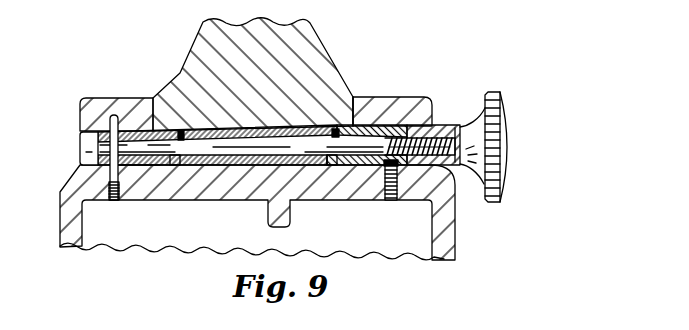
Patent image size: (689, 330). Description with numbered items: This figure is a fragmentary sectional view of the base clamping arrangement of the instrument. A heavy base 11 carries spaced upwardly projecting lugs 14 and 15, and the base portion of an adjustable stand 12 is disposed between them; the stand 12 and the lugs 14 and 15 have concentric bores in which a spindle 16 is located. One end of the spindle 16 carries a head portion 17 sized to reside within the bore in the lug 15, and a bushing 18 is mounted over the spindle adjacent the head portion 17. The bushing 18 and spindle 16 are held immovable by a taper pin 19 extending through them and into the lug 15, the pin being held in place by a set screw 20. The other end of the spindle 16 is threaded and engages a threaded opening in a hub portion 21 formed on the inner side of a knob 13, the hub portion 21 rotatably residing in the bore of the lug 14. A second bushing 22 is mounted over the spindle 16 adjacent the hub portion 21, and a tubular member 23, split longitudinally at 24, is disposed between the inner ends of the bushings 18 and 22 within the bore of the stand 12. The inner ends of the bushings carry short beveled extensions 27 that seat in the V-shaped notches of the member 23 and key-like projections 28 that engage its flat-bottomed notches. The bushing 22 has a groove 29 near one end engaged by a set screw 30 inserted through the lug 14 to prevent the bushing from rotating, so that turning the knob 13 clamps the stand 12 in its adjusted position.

The base 11 is at (448, 240).
The adjustable stand 12 is at (310, 33).
The knob 13 is at (507, 160).
The lug 14 is at (417, 96).
The lug 15 is at (102, 97).
The spindle 16 is at (283, 150).
The head portion 17 is at (80, 148).
The bushing 18 is at (143, 166).
The pin 19 is at (116, 127).
The set screw 20 is at (115, 201).
The hub portion 21 is at (443, 125).
The second bushing 22 is at (378, 125).
The tubular member 23 is at (353, 97).
The split 24 is at (203, 165).
The beveled extensions 27 is at (177, 165).
The key-like projections 28 is at (180, 130).
The groove 29 is at (377, 168).
The set screw 30 is at (392, 200).